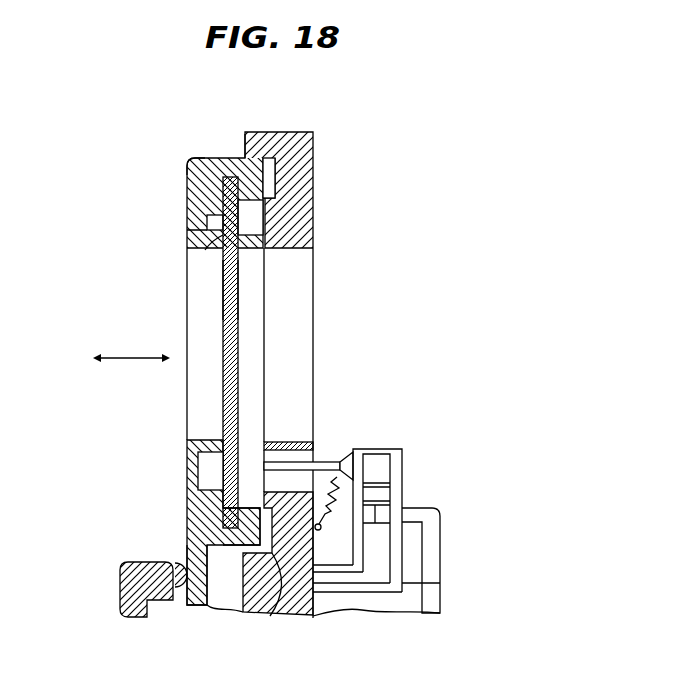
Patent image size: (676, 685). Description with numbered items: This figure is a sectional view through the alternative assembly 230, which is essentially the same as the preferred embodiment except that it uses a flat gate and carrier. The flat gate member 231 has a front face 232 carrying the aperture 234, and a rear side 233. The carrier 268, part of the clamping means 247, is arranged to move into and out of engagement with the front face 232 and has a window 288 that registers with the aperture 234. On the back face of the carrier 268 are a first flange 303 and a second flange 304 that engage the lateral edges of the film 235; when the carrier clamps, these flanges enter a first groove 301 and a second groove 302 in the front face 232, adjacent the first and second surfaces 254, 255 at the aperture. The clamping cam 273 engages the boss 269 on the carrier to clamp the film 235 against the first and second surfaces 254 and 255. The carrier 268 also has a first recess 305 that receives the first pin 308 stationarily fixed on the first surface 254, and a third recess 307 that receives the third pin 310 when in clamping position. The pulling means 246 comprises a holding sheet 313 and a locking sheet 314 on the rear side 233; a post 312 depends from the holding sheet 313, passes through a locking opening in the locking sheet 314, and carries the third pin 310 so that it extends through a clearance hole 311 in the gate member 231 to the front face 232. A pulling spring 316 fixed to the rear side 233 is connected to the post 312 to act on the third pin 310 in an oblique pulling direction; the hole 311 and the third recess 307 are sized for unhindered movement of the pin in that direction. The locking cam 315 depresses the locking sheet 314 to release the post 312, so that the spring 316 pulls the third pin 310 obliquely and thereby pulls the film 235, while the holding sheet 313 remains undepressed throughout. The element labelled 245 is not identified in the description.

The assembly 230 is at (170, 128).
The gate member 231 is at (291, 131).
The front face 232 is at (243, 138).
The rear side 233 is at (313, 148).
The aperture 234 is at (304, 267).
The film 235 is at (239, 318).
The rod 245 is at (223, 250).
The pulling means 246 is at (367, 586).
The clamping means 247 is at (187, 160).
The first surface 254 is at (288, 213).
The second surface 255 is at (262, 448).
The carrier 268 is at (187, 178).
The boss 269 is at (187, 551).
The clamping cam 273 is at (122, 580).
The window 288 is at (198, 322).
The first groove 301 is at (270, 178).
The second groove 302 is at (271, 610).
The first flange 303 is at (245, 186).
The second flange 304 is at (223, 512).
The first recess 305 is at (186, 232).
The third recess 307 is at (187, 467).
The first pin 308 is at (223, 287).
The third pin 310 is at (256, 465).
The clearance hole 311 is at (318, 458).
The post 312 is at (385, 448).
The holding sheet 313 is at (403, 583).
The locking sheet 314 is at (402, 548).
The locking cam 315 is at (404, 508).
The pulling spring 316 is at (319, 530).